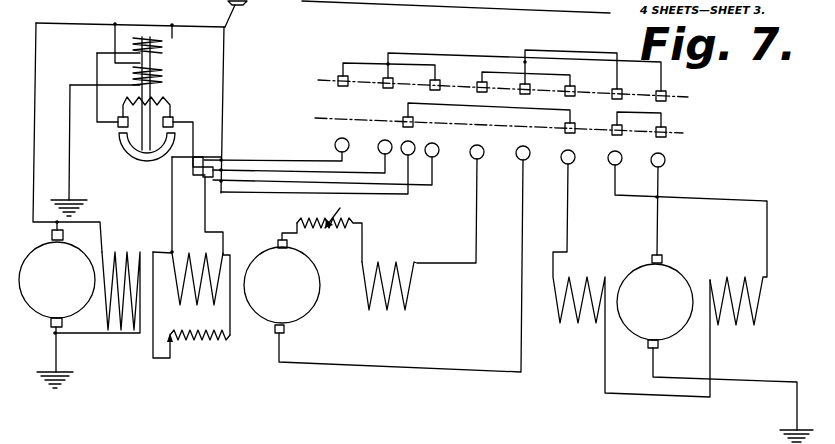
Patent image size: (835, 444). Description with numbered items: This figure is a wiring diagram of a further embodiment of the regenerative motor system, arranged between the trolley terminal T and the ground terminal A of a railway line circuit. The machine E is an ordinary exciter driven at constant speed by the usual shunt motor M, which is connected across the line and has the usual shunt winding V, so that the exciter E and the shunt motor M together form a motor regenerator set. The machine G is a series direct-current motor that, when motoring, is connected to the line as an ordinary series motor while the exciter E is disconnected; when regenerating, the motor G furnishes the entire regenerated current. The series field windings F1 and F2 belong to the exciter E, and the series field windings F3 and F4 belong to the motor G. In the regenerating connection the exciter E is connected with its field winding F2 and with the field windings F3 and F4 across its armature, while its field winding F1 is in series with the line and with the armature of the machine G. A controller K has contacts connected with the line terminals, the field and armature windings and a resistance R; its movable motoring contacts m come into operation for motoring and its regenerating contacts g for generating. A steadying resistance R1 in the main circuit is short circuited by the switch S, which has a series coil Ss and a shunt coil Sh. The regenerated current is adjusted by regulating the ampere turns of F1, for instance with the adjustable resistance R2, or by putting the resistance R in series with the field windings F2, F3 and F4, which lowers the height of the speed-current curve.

The trolley terminal T is at (420, 222).
The series coil Ss is at (170, 49).
The shunt coil Sh is at (171, 77).
The steadying resistance R1 is at (162, 104).
The switch S is at (146, 113).
The ground terminal A is at (74, 151).
The shunt motor M is at (57, 305).
The shunt winding V is at (97, 292).
The series field winding F1 is at (188, 305).
The adjustable resistance R2 is at (195, 340).
The exciter E is at (383, 266).
The resistance R is at (340, 196).
The series field winding F2 is at (419, 249).
The motor G is at (715, 304).
The series field winding F3 is at (631, 280).
The series field winding F4 is at (691, 262).
The controller K is at (536, 138).
The regenerating contacts g is at (508, 83).
The motoring contacts m is at (509, 123).